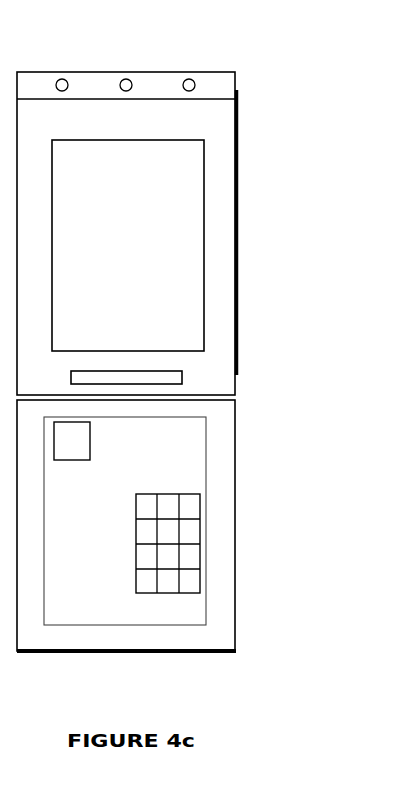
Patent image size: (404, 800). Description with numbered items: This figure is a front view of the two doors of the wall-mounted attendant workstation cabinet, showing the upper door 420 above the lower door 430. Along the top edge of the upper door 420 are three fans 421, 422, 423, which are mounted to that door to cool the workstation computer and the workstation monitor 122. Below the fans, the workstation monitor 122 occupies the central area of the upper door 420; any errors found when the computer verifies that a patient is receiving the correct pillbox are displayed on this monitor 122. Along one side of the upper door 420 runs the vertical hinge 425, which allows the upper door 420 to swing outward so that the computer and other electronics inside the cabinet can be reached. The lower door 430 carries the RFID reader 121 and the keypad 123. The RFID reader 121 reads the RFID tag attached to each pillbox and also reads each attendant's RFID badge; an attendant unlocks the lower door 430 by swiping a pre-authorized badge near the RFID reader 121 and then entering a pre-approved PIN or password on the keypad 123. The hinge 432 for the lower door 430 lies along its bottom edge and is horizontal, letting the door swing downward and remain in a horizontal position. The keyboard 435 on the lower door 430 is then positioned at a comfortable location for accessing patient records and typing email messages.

The upper door 420 is at (225, 136).
The fan 421 is at (66, 79).
The fan 422 is at (130, 79).
The fan 423 is at (193, 79).
The vertical hinge 425 is at (238, 282).
The workstation monitor 122 is at (204, 193).
The lower door 430 is at (223, 603).
The hinge 432 is at (190, 653).
The keyboard 435 is at (207, 452).
The RFID reader 121 is at (90, 441).
The keypad 123 is at (200, 515).